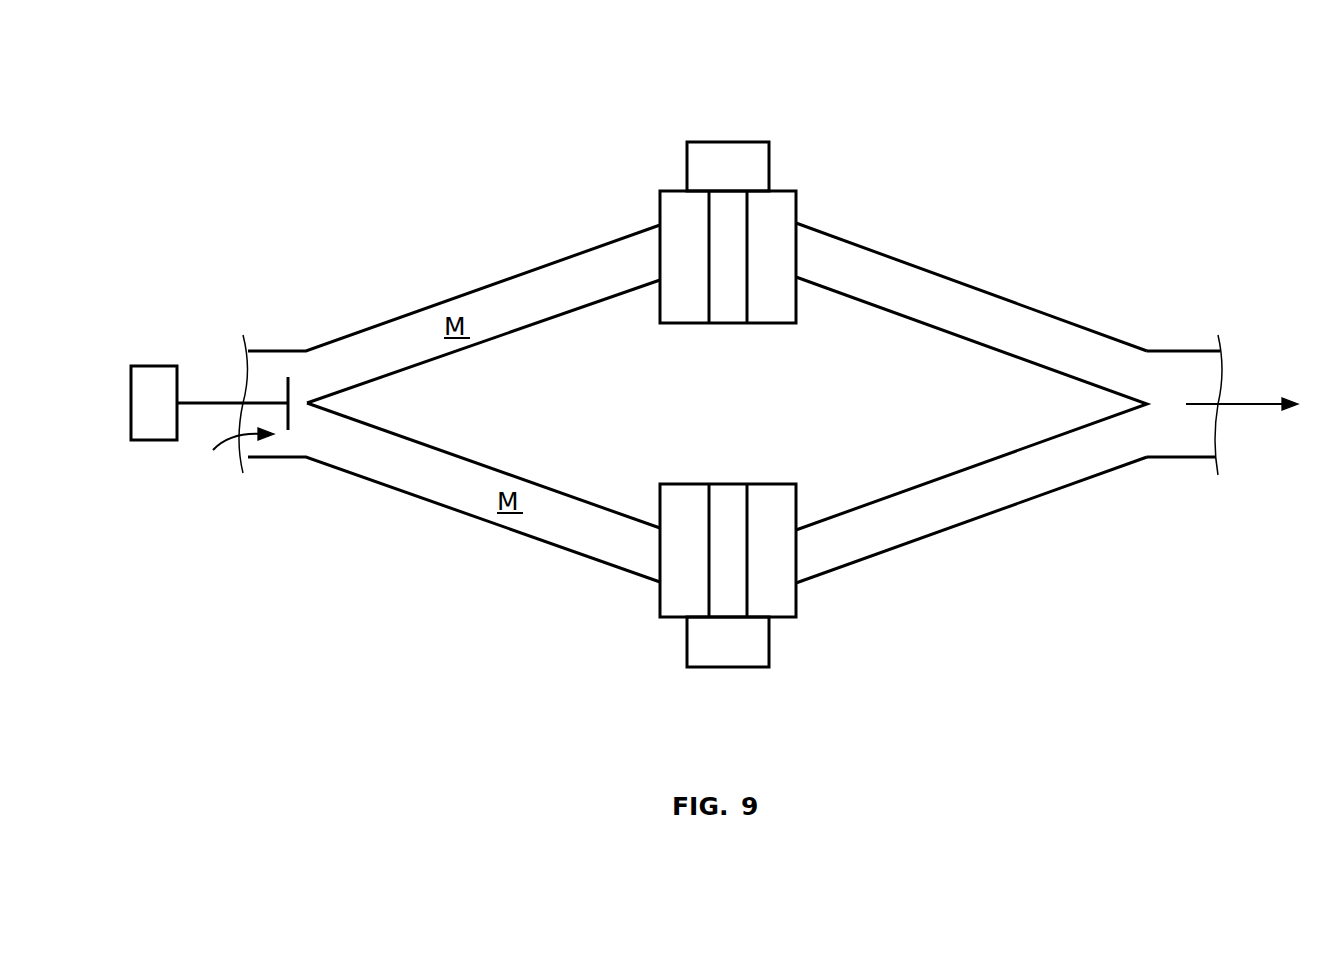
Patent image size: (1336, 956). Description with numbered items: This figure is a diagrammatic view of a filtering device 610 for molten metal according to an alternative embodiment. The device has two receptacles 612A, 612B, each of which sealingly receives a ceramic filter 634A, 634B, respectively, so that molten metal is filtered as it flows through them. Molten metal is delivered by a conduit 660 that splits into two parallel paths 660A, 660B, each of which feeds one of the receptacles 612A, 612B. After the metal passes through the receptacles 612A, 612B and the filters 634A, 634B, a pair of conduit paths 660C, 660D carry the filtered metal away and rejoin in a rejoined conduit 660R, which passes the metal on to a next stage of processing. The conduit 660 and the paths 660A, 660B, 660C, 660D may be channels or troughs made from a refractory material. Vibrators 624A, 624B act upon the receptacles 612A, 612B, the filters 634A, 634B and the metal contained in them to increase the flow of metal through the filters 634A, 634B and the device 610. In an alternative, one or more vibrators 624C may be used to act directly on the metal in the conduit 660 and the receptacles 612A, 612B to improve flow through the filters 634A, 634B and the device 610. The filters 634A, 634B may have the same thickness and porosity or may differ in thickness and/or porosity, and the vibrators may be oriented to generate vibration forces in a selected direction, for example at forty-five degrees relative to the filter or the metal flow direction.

The filtering device 610 is at (1168, 127).
The conduit 660 is at (276, 350).
The parallel path 660A is at (420, 321).
The parallel path 660B is at (460, 497).
The conduit path 660C is at (988, 290).
The conduit path 660D is at (970, 510).
The rejoined conduit 660R is at (1180, 370).
The receptacle 612A is at (796, 207).
The receptacle 612B is at (796, 604).
The ceramic filter 634A is at (727, 308).
The ceramic filter 634B is at (727, 495).
The vibrator 624A is at (720, 137).
The vibrator 624B is at (727, 667).
The vibrator 624C is at (152, 432).